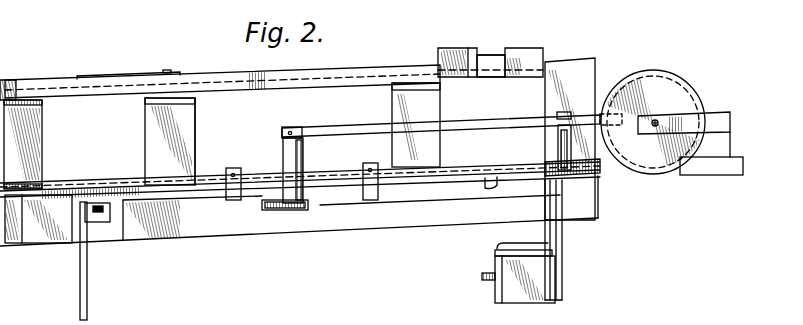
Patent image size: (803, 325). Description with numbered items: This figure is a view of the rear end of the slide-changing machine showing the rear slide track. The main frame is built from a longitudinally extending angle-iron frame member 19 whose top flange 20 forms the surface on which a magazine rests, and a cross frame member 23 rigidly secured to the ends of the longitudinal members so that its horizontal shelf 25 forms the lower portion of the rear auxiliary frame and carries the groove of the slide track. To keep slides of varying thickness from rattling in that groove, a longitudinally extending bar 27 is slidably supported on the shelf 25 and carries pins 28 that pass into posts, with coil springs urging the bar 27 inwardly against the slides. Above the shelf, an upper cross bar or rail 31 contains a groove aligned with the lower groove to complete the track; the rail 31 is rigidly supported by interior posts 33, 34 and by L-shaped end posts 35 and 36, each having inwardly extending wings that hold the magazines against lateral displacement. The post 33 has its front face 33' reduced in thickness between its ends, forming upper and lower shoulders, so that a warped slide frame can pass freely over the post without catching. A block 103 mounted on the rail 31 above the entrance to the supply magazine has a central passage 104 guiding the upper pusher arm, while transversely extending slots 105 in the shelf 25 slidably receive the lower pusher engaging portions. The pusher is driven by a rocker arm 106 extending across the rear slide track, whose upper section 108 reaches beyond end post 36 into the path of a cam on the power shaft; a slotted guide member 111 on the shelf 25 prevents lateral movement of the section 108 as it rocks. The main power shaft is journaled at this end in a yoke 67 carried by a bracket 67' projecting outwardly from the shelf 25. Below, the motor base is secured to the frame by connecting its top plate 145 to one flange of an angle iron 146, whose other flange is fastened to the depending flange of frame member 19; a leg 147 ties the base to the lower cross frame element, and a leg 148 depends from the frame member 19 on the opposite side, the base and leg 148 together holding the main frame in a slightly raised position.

The longitudinal frame member 19 is at (77, 240).
The top flange 20 is at (128, 212).
The cross frame member 23 is at (415, 218).
The horizontal shelf 25 is at (352, 188).
The bar 27 is at (350, 152).
The pin 28 is at (378, 164).
The upper cross bar or rail 31 is at (362, 71).
The interior post 33 is at (153, 141).
The front face 33' is at (151, 115).
The interior post 34 is at (400, 97).
The end post 35 is at (12, 88).
The end post 36 is at (580, 70).
The yoke 67 is at (675, 122).
The bracket 67' is at (711, 177).
The block 103 is at (528, 55).
The passage 104 is at (487, 58).
The slot 105 is at (493, 192).
The rocker arm 106 is at (298, 208).
The upper section 108 is at (451, 127).
The guide member 111 is at (599, 174).
The top plate 145 is at (495, 253).
The angle iron 146 is at (498, 244).
The leg 147 is at (562, 262).
The leg 148 is at (80, 290).